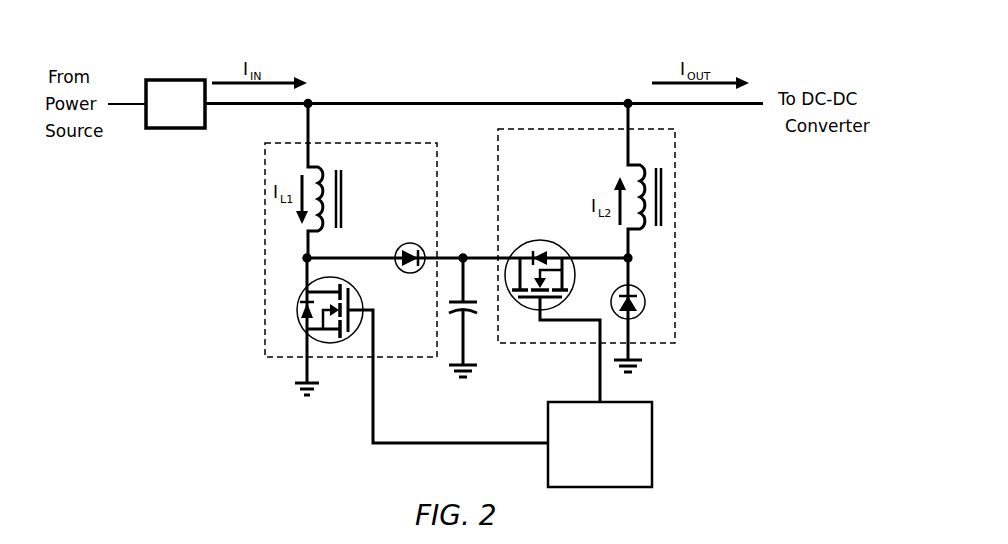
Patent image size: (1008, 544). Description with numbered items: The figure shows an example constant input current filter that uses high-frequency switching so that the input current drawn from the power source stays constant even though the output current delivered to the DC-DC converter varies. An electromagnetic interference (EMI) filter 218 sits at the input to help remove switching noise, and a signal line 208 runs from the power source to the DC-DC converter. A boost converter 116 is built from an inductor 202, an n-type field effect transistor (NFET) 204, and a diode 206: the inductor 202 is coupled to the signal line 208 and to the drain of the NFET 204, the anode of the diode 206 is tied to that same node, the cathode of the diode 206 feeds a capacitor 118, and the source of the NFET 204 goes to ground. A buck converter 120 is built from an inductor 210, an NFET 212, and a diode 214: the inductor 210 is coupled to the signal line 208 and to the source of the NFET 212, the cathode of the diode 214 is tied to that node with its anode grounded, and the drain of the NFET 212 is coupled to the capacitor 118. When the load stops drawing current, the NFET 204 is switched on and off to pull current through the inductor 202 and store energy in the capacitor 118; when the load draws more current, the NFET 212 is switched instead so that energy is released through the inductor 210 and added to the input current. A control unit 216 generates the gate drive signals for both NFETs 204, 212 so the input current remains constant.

The boost converter 116 is at (265, 328).
The capacitor 118 is at (478, 316).
The buck converter 120 is at (675, 318).
The inductor 202 is at (318, 166).
The n-type field effect transistor (NFET) 204 is at (297, 305).
The diode 206 is at (419, 247).
The signal line 208 is at (463, 103).
The inductor 210 is at (640, 165).
The NFET 212 is at (513, 250).
The diode 214 is at (646, 298).
The control unit 216 is at (652, 462).
The electromagnetic interference (EMI) filter 218 is at (165, 80).